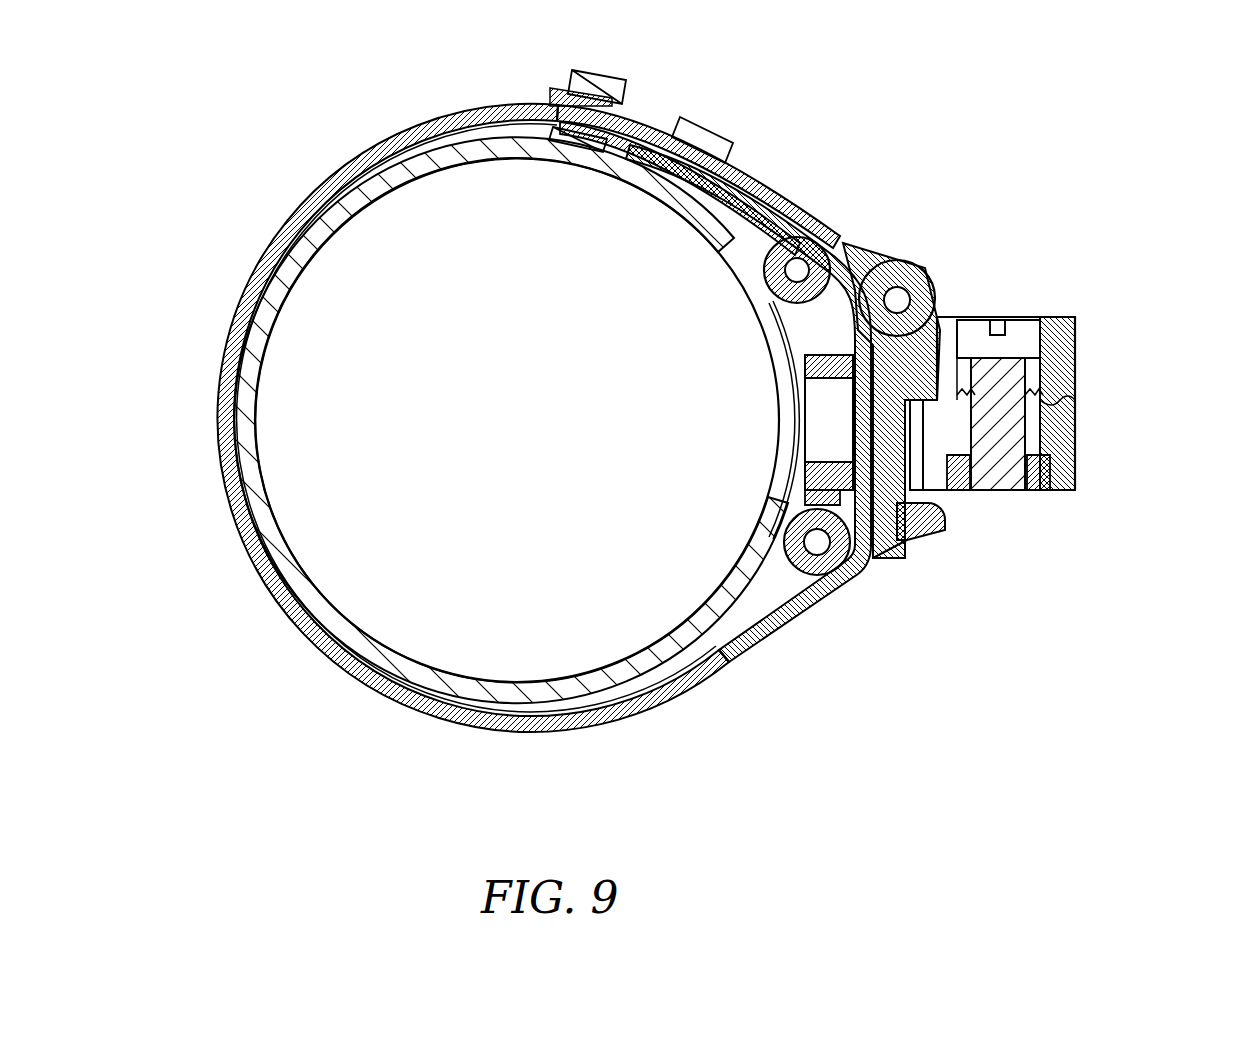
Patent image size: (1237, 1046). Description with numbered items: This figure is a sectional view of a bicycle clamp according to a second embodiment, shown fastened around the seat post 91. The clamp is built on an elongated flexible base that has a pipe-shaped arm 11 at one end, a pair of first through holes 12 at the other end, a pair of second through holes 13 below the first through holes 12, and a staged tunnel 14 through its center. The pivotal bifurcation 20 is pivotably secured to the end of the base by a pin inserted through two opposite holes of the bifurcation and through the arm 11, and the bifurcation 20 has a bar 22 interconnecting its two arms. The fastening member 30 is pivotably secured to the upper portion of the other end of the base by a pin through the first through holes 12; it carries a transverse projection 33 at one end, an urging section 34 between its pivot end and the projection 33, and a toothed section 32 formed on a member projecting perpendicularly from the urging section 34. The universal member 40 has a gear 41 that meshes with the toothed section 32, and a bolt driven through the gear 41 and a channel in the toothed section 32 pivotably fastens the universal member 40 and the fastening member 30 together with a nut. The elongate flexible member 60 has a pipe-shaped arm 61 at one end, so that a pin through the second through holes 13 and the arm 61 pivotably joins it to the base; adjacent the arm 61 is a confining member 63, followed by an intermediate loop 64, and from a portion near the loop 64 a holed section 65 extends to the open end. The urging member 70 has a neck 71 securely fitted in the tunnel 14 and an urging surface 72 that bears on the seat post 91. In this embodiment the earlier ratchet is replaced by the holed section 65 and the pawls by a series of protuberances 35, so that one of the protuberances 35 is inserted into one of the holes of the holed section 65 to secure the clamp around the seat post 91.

The pipe-shaped arm 11 is at (800, 560).
The first through holes 12 is at (906, 270).
The second through holes 13 is at (784, 268).
The staged tunnel 14 is at (803, 500).
The pivotal bifurcation 20 is at (948, 500).
The bar 22 is at (908, 536).
The fastening member 30 is at (1076, 331).
The toothed section 32 is at (1080, 392).
The transverse projection 33 is at (906, 542).
The urging section 34 is at (840, 582).
The protuberances 35 is at (858, 268).
The universal member 40 is at (1076, 463).
The gear 41 is at (1080, 425).
The flexible member 60 is at (288, 216).
The pipe-shaped arm 61 is at (887, 262).
The confining member 63 is at (696, 125).
The intermediate loop 64 is at (572, 80).
The holed section 65 is at (700, 690).
The urging member 70 is at (804, 402).
The neck 71 is at (802, 474).
The urging surface 72 is at (802, 430).
The seat post 91 is at (360, 172).